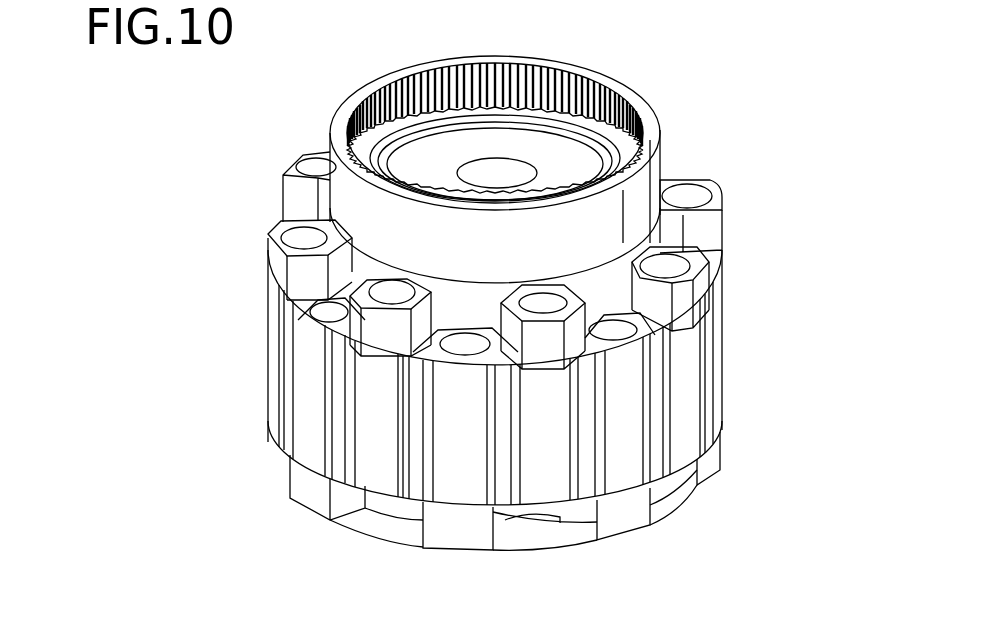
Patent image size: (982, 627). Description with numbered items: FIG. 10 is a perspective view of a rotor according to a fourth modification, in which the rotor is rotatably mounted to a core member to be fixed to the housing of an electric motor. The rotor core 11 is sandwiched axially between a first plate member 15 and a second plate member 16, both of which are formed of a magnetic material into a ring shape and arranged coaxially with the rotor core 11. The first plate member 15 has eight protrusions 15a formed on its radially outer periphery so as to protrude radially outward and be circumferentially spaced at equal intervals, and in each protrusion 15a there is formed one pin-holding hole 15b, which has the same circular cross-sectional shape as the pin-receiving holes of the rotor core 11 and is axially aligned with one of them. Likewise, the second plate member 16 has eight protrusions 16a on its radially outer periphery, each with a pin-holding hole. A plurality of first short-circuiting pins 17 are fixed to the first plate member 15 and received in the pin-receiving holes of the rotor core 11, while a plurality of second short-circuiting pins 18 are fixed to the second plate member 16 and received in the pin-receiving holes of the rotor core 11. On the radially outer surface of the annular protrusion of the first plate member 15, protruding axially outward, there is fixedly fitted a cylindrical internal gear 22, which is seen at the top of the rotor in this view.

The cylindrical internal gear 22 is at (338, 103).
The first plate member 15 is at (266, 262).
The protrusion 15a is at (710, 228).
The pin-holding hole 15b is at (708, 183).
The first short-circuiting pin 17 is at (292, 236).
The second short-circuiting pin 18 is at (329, 313).
The rotor core 11 is at (264, 396).
The second plate member 16 is at (303, 508).
The protrusion 16a is at (627, 518).